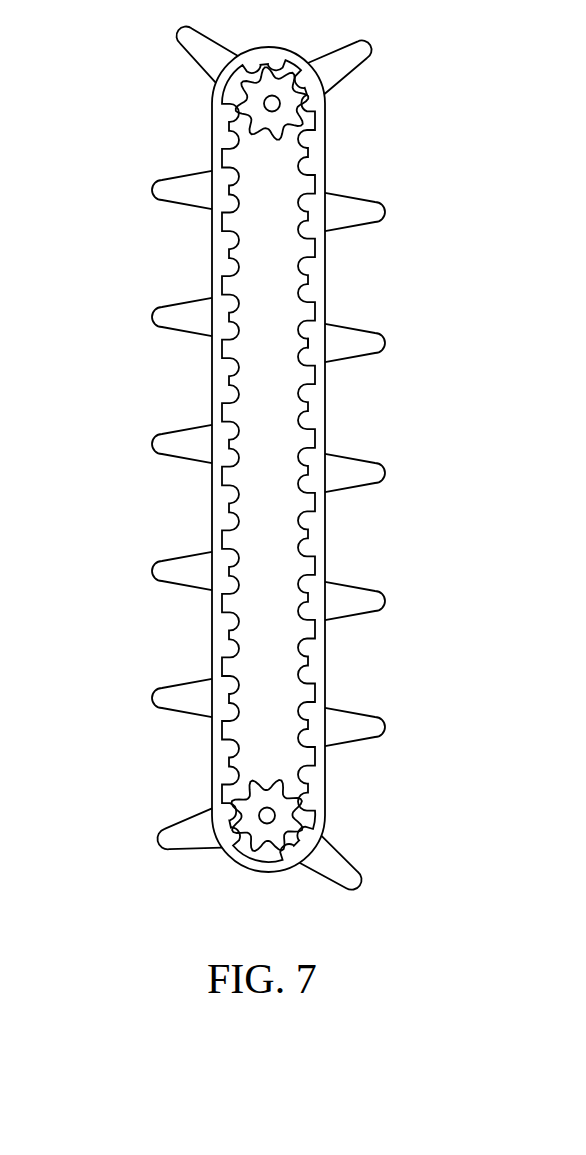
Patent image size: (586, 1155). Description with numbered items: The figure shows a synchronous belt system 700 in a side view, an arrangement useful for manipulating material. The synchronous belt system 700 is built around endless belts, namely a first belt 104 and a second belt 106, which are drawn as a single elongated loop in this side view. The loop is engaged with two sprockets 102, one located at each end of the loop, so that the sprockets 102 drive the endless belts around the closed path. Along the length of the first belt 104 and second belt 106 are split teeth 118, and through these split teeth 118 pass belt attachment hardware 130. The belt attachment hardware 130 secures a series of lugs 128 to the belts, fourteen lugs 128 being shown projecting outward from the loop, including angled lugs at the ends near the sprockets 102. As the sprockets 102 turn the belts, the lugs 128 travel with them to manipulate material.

The synchronous belt system 700 is at (145, 49).
The sprocket 102 is at (302, 97).
The first belt 104 is at (193, 459).
The second belt 106 is at (212, 265).
The split teeth 118 is at (405, 356).
The belt attachment hardware 130 is at (316, 344).
The lug 128 is at (385, 203).